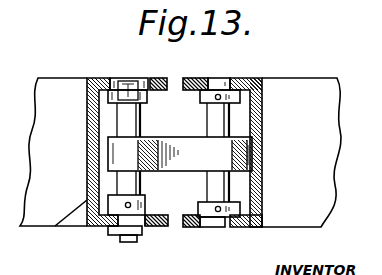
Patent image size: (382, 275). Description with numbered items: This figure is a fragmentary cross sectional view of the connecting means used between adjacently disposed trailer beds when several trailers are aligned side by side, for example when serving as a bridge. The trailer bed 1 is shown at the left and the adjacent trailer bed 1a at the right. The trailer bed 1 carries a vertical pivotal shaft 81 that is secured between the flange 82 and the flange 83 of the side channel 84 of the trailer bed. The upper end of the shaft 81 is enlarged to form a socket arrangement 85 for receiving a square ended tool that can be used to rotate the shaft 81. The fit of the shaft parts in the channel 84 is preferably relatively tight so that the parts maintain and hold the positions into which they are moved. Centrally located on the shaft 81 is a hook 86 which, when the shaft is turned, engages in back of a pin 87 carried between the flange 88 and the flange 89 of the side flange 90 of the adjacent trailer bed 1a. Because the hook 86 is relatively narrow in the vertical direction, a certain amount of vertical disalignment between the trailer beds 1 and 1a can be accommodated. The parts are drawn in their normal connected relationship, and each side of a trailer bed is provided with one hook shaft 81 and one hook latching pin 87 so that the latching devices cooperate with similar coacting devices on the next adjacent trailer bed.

The trailer bed 1 is at (61, 74).
The adjacent trailer bed 1a is at (316, 57).
The vertical pivotal shaft 81 is at (118, 120).
The flange 82 is at (167, 67).
The flange 83 is at (157, 226).
The side channel 84 is at (54, 226).
The socket arrangement 85 is at (113, 78).
The hook 86 is at (190, 136).
The pin 87 is at (233, 122).
The flange 88 is at (196, 78).
The flange 89 is at (197, 228).
The side flange 90 is at (263, 186).